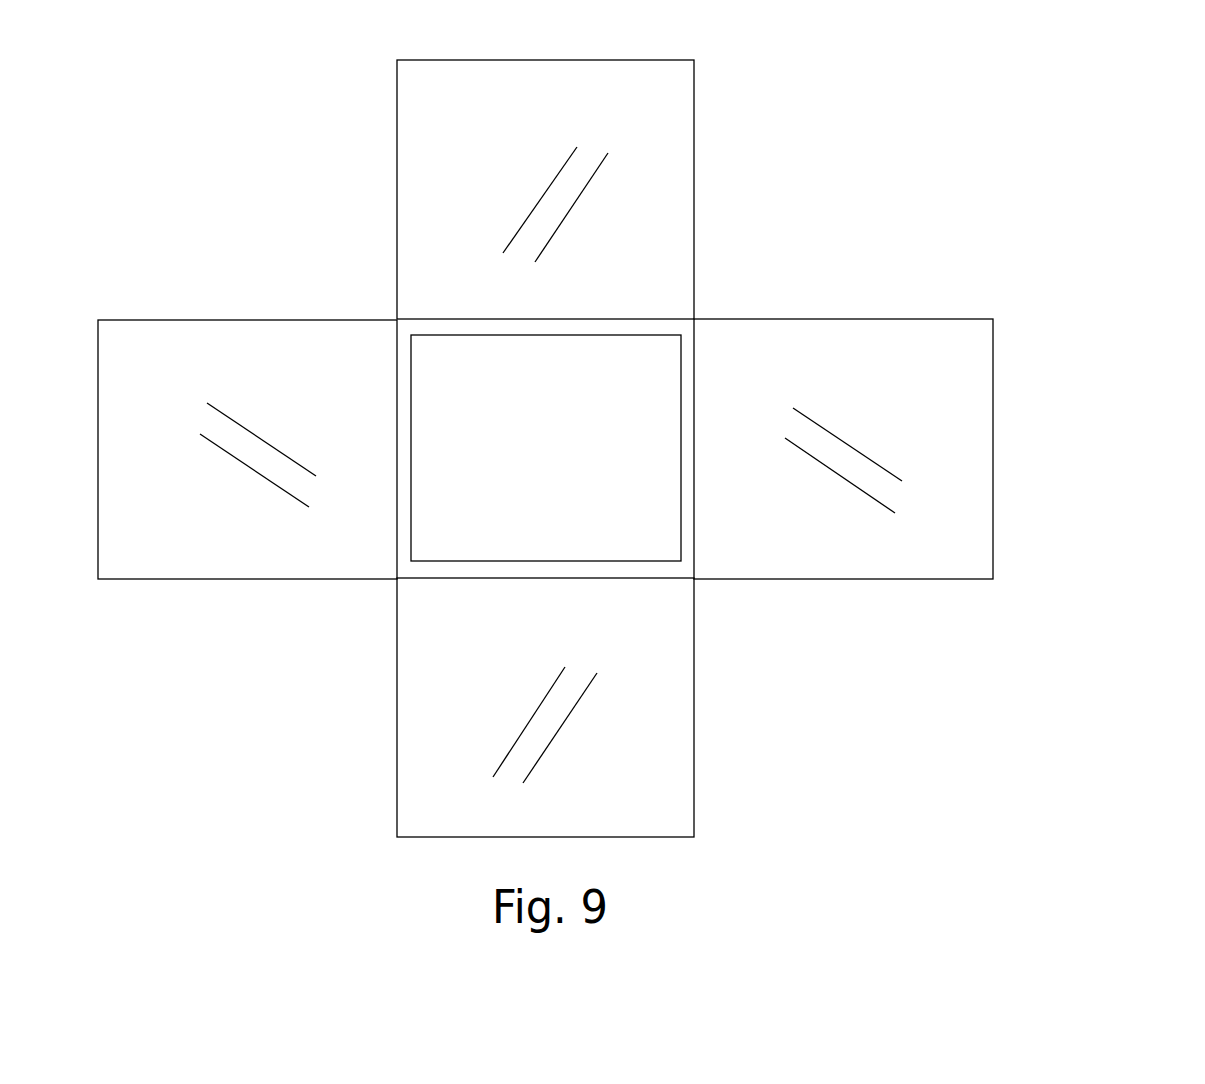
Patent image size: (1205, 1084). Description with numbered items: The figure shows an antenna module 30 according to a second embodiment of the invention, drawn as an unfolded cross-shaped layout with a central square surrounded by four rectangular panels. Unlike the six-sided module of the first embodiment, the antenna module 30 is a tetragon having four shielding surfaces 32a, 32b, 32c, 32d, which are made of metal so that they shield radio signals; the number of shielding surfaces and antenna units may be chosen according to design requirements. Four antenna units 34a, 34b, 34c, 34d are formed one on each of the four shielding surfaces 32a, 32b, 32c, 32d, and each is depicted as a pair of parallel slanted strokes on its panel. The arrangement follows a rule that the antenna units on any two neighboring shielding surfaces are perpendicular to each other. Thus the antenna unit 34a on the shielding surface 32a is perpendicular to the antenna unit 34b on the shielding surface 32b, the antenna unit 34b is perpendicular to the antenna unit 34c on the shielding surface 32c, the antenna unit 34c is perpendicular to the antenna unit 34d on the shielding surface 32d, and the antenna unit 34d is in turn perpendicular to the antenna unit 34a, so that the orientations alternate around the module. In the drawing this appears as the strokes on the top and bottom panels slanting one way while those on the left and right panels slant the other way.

The antenna module 30 is at (627, 448).
The shielding surface 32a is at (625, 570).
The shielding surface 32b is at (687, 503).
The shielding surface 32c is at (656, 327).
The shielding surface 32d is at (402, 365).
The antenna unit 34a is at (542, 672).
The antenna unit 34b is at (747, 412).
The antenna unit 34c is at (552, 143).
The antenna unit 34d is at (158, 400).